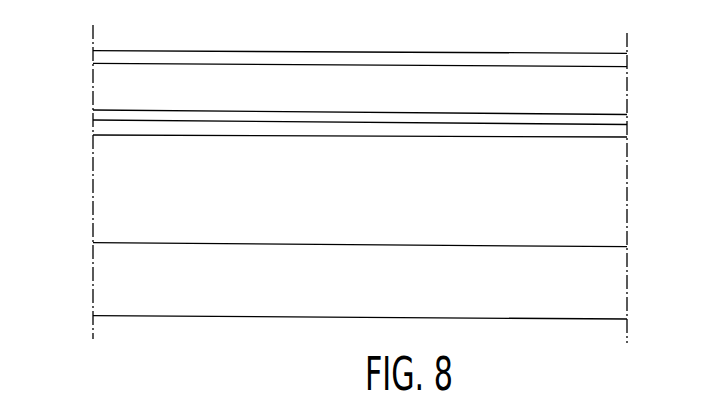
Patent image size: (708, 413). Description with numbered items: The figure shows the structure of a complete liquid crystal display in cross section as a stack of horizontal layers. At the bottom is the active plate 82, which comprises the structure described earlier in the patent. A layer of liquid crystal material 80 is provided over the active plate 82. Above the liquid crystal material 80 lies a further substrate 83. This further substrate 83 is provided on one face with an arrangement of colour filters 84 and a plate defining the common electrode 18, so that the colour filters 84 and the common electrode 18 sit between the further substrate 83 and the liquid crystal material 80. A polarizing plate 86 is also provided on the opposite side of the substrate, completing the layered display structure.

The polarizing plate 86 is at (622, 61).
The further substrate 83 is at (622, 93).
The colour filters 84 is at (622, 118).
The common electrode 18 is at (622, 136).
The liquid crystal material 80 is at (622, 190).
The active plate 82 is at (640, 247).